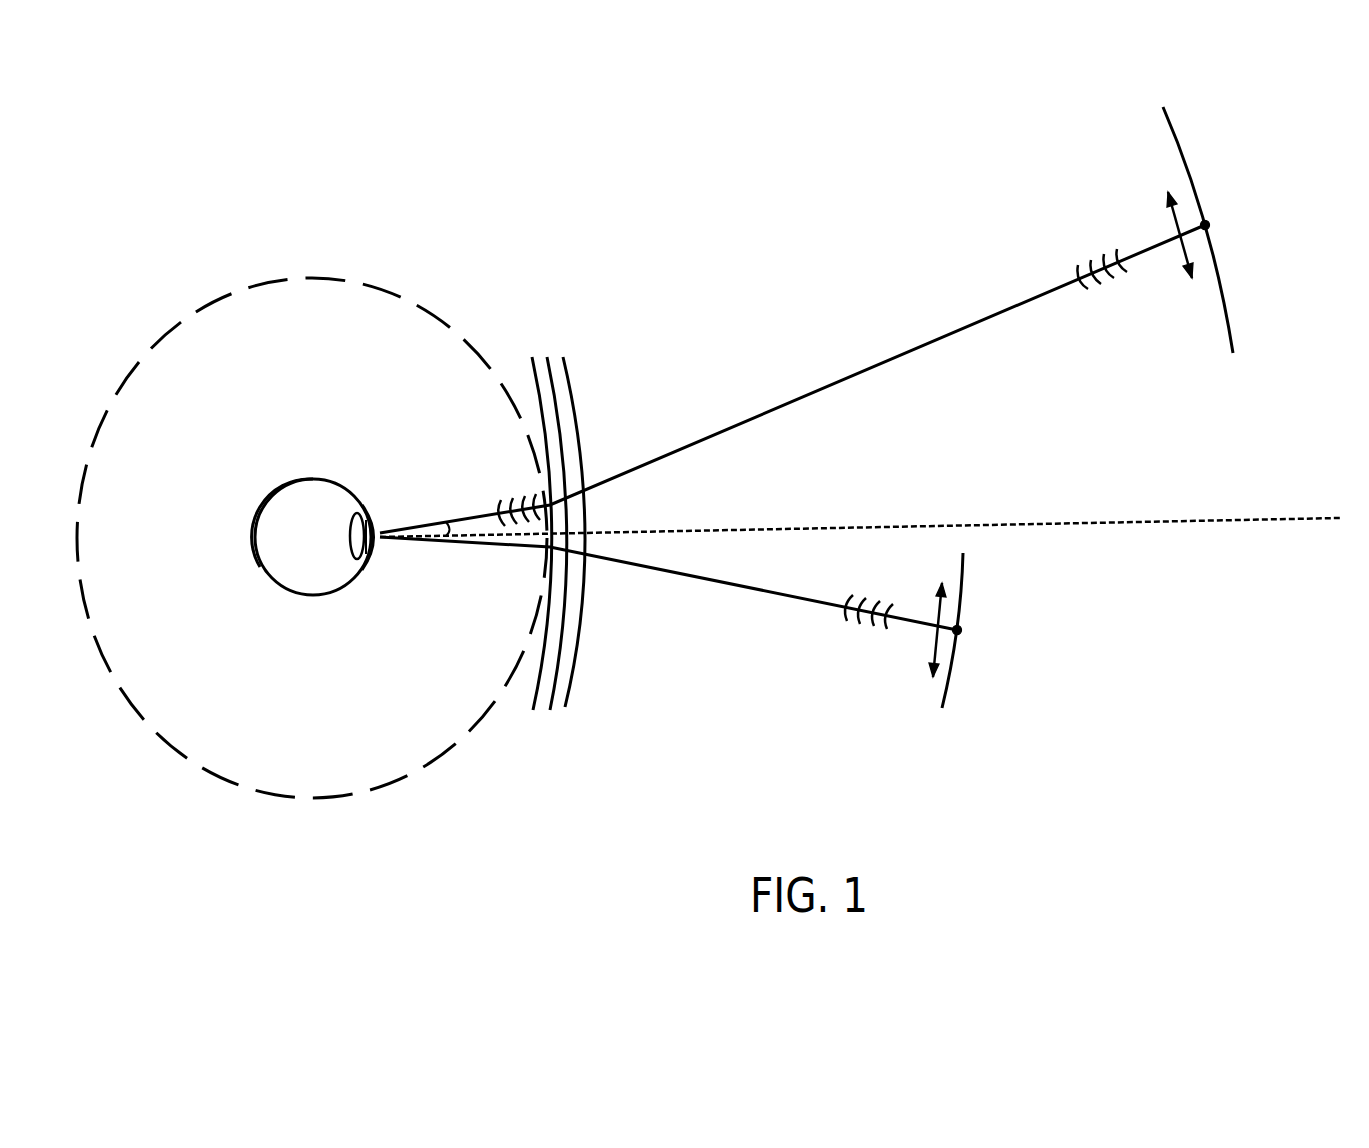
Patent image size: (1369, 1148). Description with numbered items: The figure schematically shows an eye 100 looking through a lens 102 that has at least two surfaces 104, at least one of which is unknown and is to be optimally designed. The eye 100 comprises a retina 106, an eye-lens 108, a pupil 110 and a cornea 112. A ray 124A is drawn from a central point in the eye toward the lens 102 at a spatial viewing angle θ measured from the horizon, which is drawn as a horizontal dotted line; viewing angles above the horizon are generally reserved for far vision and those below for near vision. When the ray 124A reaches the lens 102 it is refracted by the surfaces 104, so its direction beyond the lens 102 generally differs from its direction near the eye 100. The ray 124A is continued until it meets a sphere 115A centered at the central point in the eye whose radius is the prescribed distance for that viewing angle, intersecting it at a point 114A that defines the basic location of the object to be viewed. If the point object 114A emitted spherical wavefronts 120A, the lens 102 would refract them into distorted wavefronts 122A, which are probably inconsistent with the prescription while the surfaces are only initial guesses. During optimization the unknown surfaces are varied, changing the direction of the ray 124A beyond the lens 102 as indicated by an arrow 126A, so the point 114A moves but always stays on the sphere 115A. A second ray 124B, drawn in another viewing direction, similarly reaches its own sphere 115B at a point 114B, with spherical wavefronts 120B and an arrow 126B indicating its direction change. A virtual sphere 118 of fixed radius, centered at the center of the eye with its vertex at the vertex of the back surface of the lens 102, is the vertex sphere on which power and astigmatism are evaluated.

The eye 100 is at (277, 468).
The lens 102 is at (578, 532).
The surfaces 104 is at (583, 627).
The retina 106 is at (260, 567).
The eye-lens 108 is at (347, 554).
The pupil 110 is at (378, 547).
The cornea 112 is at (371, 504).
The point 114A is at (1209, 225).
The point 114B is at (961, 630).
The sphere 115A is at (1222, 273).
The sphere 115B is at (957, 662).
The virtual sphere 118 is at (343, 275).
The spherical wavefronts 120A is at (1123, 243).
The spherical wavefronts 120B is at (873, 630).
The distorted wavefronts 122A is at (528, 498).
The ray 124A is at (402, 527).
The ray 124B is at (437, 547).
The arrow 126A is at (1172, 226).
The arrow 126B is at (927, 645).